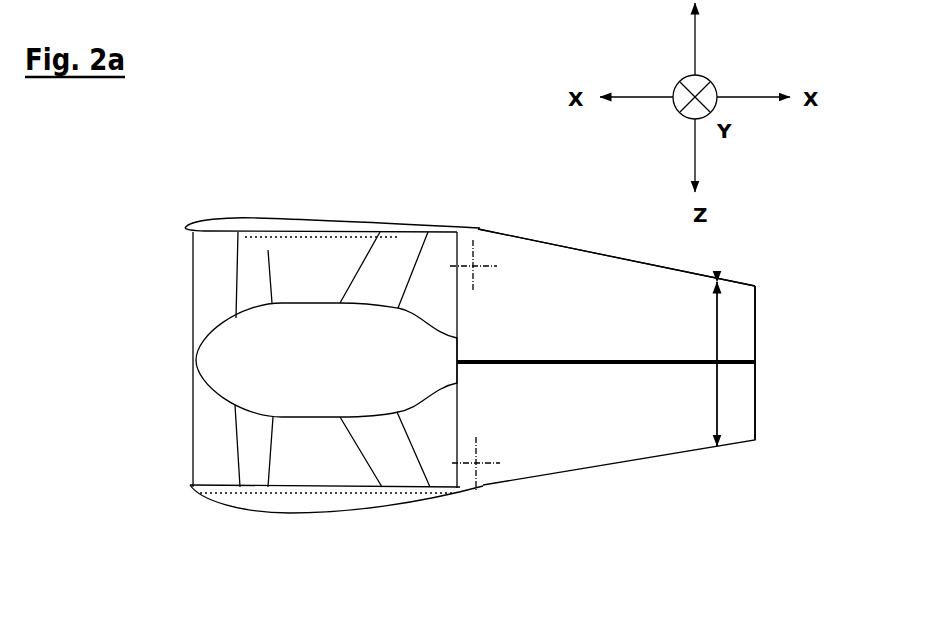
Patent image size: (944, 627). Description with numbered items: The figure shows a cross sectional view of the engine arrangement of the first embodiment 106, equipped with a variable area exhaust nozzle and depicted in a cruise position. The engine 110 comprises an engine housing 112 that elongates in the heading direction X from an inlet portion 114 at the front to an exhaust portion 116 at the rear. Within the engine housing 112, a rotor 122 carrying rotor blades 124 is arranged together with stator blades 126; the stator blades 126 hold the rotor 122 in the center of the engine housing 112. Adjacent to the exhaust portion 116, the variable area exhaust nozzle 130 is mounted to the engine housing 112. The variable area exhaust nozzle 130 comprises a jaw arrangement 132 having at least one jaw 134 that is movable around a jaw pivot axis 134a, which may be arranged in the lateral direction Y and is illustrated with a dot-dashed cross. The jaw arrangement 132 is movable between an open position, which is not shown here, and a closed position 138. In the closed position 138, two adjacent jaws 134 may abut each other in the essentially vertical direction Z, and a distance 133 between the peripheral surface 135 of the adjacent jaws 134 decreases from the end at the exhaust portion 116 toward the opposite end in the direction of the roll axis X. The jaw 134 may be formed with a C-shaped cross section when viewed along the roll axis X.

The engine arrangement of the first embodiment 106 is at (136, 209).
The engine 110 is at (152, 350).
The engine housing 112 is at (270, 507).
The inlet portion 114 is at (186, 431).
The exhaust portion 116 is at (460, 383).
The rotor 122 is at (272, 349).
The rotor blades 124 is at (247, 269).
The stator blades 126 is at (408, 250).
The variable area exhaust nozzle 130 is at (615, 245).
The jaw arrangement 132 is at (533, 228).
The distance 133 is at (686, 364).
The jaw 134 is at (759, 312).
The jaw pivot axis 134a is at (474, 266).
The peripheral surface 135 is at (729, 274).
The closed position 138 is at (770, 412).